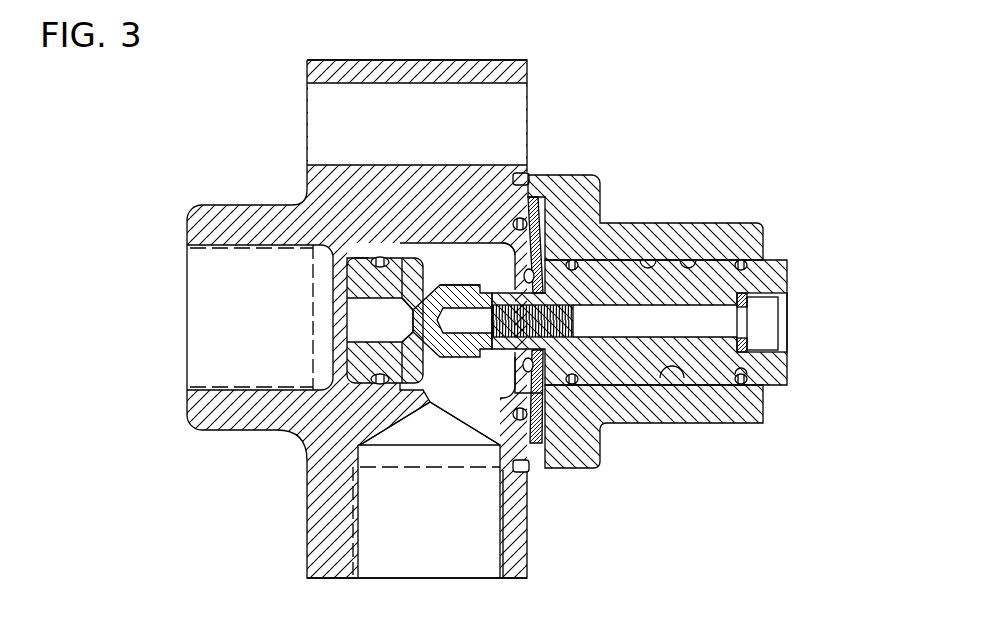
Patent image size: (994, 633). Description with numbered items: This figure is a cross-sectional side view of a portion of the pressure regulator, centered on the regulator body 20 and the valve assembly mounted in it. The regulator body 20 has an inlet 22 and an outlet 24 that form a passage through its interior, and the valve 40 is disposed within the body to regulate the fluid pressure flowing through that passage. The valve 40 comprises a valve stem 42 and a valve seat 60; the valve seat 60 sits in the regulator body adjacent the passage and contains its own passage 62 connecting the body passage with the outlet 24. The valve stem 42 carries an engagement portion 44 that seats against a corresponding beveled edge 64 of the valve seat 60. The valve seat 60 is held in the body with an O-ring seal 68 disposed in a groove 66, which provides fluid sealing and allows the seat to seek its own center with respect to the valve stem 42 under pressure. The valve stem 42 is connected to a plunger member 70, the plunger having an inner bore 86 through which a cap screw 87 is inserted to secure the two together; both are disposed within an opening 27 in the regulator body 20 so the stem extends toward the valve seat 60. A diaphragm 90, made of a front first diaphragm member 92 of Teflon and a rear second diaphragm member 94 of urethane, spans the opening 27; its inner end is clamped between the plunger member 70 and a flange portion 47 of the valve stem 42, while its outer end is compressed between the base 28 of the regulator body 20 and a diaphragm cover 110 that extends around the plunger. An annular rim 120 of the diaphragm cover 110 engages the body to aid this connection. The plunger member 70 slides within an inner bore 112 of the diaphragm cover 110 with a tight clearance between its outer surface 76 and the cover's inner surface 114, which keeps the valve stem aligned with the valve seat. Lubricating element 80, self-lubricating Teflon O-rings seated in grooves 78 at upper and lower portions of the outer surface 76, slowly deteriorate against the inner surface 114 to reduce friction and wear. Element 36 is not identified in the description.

The regulator body 20 is at (268, 438).
The inlet 22 is at (388, 568).
The outlet 24 is at (202, 343).
The opening 27 is at (512, 252).
The base 28 is at (527, 195).
The top port 36 is at (378, 85).
The valve 40 is at (475, 385).
The valve stem 42 is at (462, 284).
The engagement portion 44 is at (415, 313).
The flange portion 47 is at (520, 373).
The valve seat 60 is at (357, 282).
The passage 62 is at (447, 390).
The beveled edge 64 is at (432, 284).
The groove 66 is at (380, 257).
The O-ring seal 68 is at (378, 258).
The plunger member 70 is at (782, 273).
The outer surface 76 is at (688, 373).
The groove 78 is at (745, 376).
The lubricating element 80 is at (742, 260).
The inner bore 86 is at (747, 317).
The cap screw 87 is at (767, 332).
The diaphragm 90 is at (552, 421).
The first diaphragm member 92 is at (528, 464).
The second diaphragm member 94 is at (525, 437).
The diaphragm cover 110 is at (733, 222).
The inner bore 112 is at (708, 256).
The inner surface 114 is at (666, 256).
The annular rim 120 is at (417, 605).